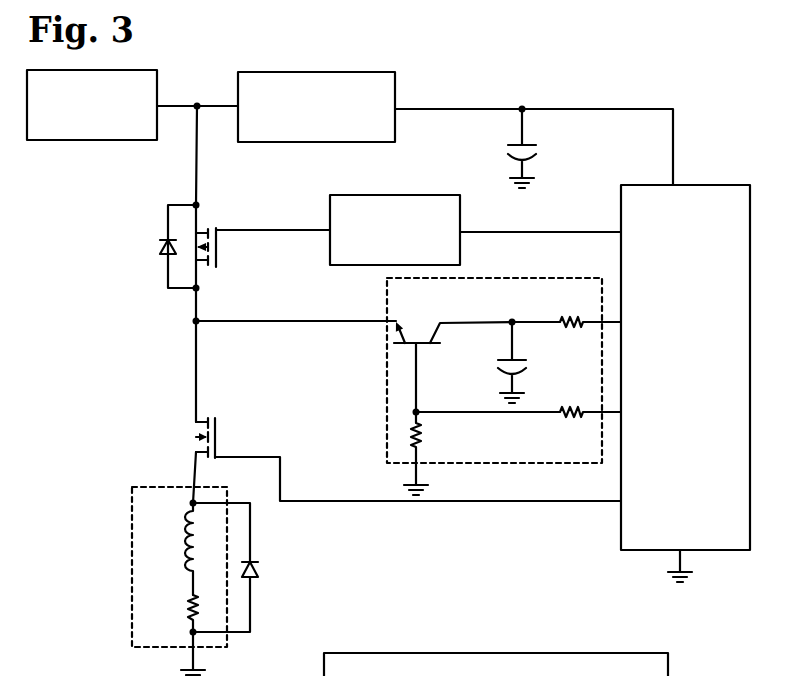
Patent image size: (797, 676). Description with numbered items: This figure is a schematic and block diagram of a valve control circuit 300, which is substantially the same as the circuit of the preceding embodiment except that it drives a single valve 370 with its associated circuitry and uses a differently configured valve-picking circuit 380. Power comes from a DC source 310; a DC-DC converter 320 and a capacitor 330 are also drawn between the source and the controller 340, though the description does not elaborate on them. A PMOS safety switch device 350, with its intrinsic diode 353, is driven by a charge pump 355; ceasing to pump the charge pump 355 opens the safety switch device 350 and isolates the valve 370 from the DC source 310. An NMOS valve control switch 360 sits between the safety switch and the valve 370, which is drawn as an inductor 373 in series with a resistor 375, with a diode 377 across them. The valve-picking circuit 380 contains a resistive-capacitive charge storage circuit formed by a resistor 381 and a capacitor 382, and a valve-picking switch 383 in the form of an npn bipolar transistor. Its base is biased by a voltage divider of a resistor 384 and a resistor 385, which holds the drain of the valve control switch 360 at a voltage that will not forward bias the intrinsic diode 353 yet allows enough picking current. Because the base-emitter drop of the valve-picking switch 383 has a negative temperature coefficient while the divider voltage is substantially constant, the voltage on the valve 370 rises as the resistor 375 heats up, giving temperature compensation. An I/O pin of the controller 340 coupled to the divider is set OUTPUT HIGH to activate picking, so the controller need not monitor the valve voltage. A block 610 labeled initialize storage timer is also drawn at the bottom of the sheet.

The valve control circuit 300 is at (627, 69).
The DC source 310 is at (105, 71).
The DC-DC converter 320 is at (338, 72).
The capacitor 330 is at (530, 145).
The controller 340 is at (697, 185).
The PMOS safety switch device 350 is at (218, 246).
The intrinsic diode 353 is at (158, 247).
The charge pump 355 is at (400, 195).
The NMOS valve control switch 360 is at (216, 436).
The valve 370 is at (110, 566).
The inductor 373 is at (180, 550).
The resistor 375 is at (189, 600).
The diode 377 is at (259, 570).
The valve-picking circuit 380 is at (372, 362).
The resistor 381 is at (578, 316).
The capacitor 382 is at (521, 358).
The valve-picking switch 383 is at (424, 345).
The resistor 384 is at (572, 418).
The resistor 385 is at (421, 441).
The initialize storage timer step 610 is at (618, 653).